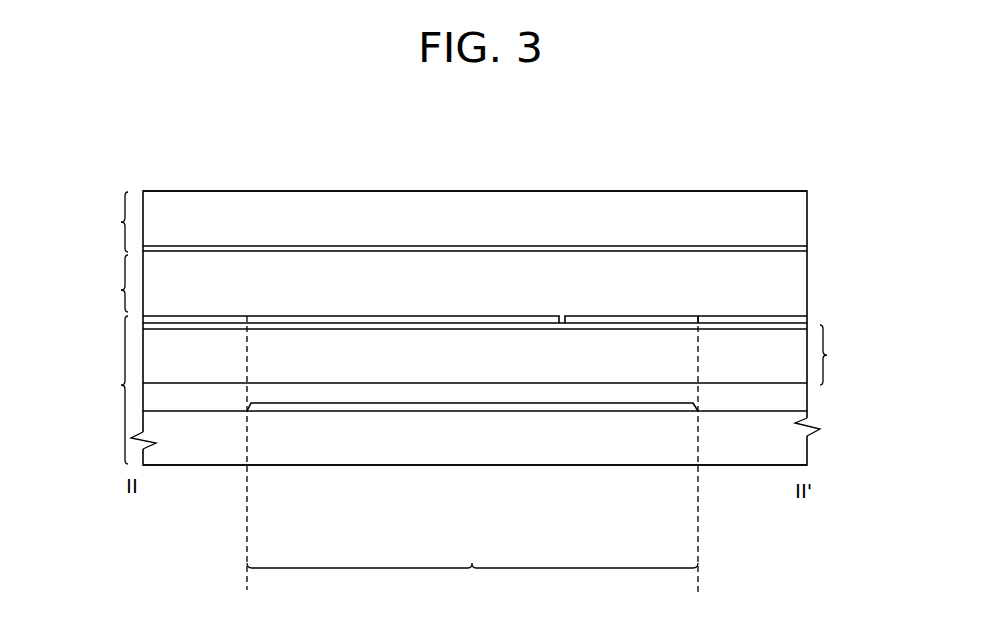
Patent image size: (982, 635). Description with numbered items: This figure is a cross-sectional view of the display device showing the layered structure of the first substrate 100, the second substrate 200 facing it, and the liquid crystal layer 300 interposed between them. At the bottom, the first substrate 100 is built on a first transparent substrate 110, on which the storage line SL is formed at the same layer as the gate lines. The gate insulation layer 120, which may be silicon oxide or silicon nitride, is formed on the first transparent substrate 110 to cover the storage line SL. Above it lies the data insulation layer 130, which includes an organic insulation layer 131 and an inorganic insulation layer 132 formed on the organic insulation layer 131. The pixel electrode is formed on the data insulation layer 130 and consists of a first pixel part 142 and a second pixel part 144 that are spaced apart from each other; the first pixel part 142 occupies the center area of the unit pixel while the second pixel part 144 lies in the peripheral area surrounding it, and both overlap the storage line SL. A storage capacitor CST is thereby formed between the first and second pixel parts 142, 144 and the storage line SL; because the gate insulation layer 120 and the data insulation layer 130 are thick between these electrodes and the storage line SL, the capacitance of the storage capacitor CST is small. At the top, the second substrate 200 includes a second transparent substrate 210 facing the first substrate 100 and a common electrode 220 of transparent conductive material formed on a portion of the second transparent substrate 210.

The first substrate 100 is at (451, 328).
The second substrate 200 is at (105, 222).
The liquid crystal layer 300 is at (105, 283).
The second transparent substrate 210 is at (197, 220).
The common electrode 220 is at (270, 248).
The second pixel part 144 is at (370, 318).
The first pixel part 142 is at (617, 320).
The inorganic insulation layer 132 is at (666, 320).
The organic insulation layer 131 is at (733, 352).
The data insulation layer 130 is at (509, 355).
The gate insulation layer 120 is at (745, 411).
The storage line SL is at (600, 405).
The first transparent substrate 110 is at (475, 445).
The storage capacitor CST is at (472, 459).